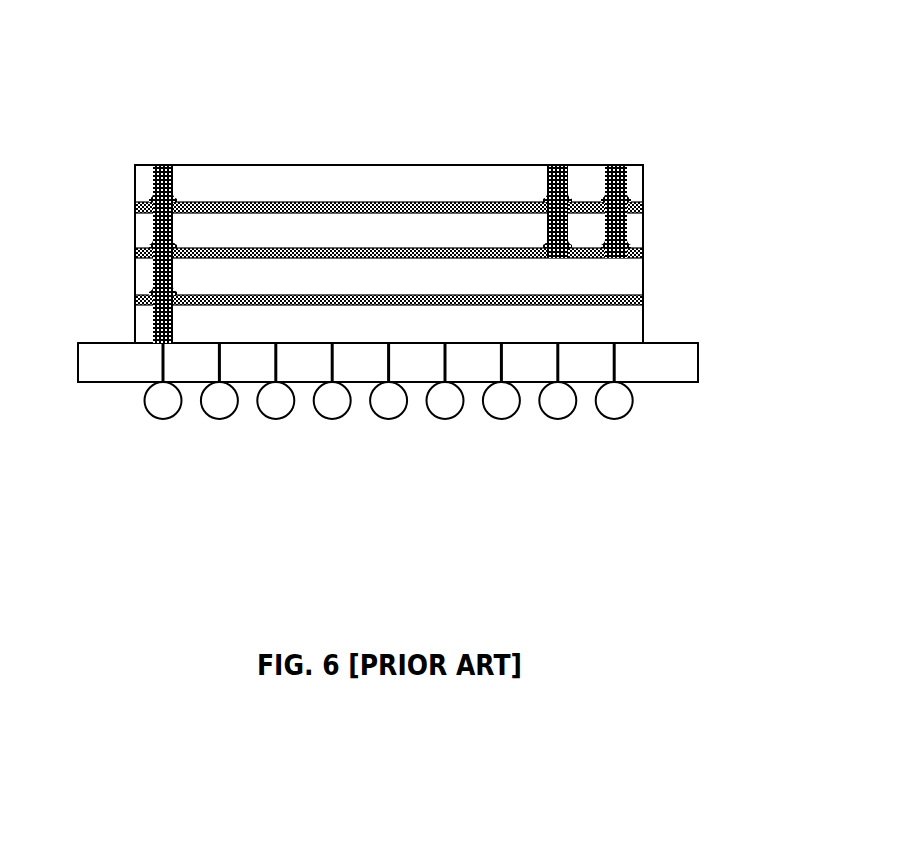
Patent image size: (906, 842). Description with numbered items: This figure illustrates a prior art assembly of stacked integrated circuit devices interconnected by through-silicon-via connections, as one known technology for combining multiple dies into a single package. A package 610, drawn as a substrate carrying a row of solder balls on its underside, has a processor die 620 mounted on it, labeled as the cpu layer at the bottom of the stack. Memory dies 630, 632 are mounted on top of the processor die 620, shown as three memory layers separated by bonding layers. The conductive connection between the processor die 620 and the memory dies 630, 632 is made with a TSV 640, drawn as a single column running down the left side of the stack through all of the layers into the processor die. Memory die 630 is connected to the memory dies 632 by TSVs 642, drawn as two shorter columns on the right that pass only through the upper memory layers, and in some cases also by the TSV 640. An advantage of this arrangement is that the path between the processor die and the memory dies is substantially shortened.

The package 610 is at (98, 383).
The processor die 620 is at (647, 322).
The memory die 630 is at (293, 252).
The memory dies 632 is at (490, 207).
The TSV 640 is at (160, 175).
The TSVs 642 is at (610, 157).